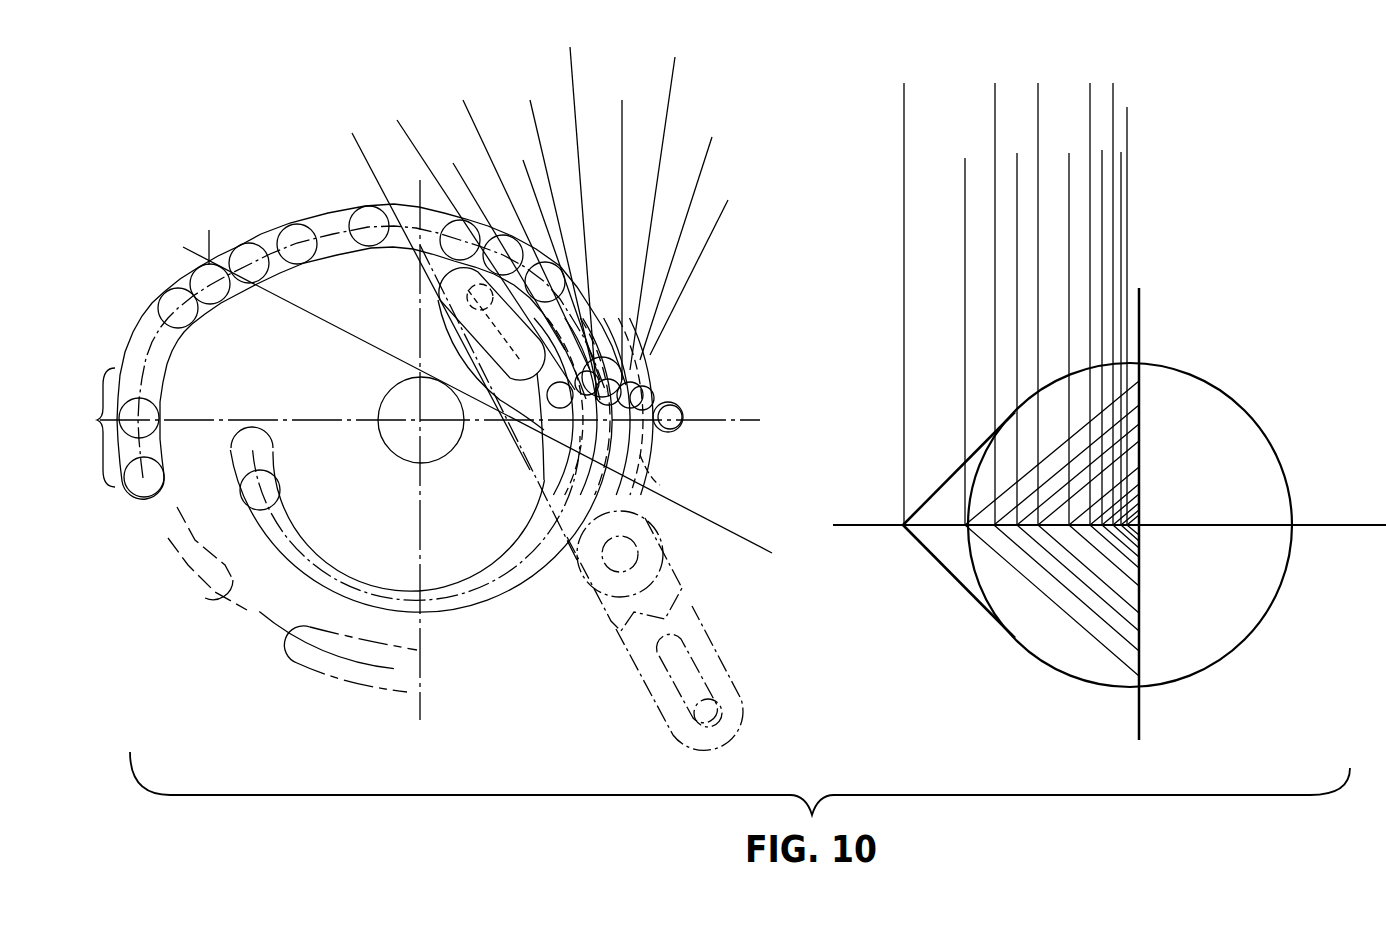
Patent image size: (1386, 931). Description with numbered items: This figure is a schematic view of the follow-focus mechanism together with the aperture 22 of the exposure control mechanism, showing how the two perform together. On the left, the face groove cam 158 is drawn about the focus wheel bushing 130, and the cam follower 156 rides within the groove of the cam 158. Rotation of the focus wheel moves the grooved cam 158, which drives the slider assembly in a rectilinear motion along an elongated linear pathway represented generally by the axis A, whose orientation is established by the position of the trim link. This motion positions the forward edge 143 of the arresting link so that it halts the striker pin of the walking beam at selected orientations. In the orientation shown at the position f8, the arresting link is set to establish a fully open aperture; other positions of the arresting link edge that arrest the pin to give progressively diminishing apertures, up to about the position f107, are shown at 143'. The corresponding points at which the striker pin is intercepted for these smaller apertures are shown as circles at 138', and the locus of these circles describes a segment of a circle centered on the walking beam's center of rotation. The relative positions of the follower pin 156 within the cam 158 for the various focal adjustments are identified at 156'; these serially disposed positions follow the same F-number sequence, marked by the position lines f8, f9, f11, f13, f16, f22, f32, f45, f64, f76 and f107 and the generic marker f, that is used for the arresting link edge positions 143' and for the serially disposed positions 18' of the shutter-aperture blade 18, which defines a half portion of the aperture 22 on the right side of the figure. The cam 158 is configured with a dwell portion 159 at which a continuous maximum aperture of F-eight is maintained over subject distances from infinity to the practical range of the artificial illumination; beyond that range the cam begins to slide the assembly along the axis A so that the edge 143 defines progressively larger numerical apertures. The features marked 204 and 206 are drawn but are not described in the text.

The F/8 aperture position f8 is at (90, 393).
The F/9 aperture position f9 is at (143, 277).
The F/11 aperture position f11 is at (602, 292).
The F/13 aperture position f13 is at (743, 300).
The F/16 aperture position f16 is at (786, 292).
The F/22 aperture position f22 is at (805, 300).
The F/32 aperture position f32 is at (831, 275).
The F/45 aperture position f45 is at (619, 227).
The F/64 aperture position f64 is at (884, 278).
The F/76 aperture position f76 is at (1121, 152).
The F/107 aperture position f107 is at (1148, 107).
The F-number position f is at (1097, 323).
The focus wheel bushing 130 is at (388, 404).
The forward edge of arresting link 143 is at (491, 375).
The arresting link edge positions 143' is at (693, 461).
The striker pin intercept positions 138' is at (698, 399).
The cam follower 156 is at (353, 351).
The follower pin positions 156' is at (332, 346).
The face groove cam 158 is at (475, 612).
The dwell portion 159 is at (97, 420).
The guide segment 204 is at (315, 638).
The guide segment 206 is at (203, 590).
The axis A is at (488, 412).
The aperture 22 is at (1258, 447).
The shutter-aperture blade 18 is at (959, 525).
The shutter-aperture blade positions 18' is at (1086, 547).